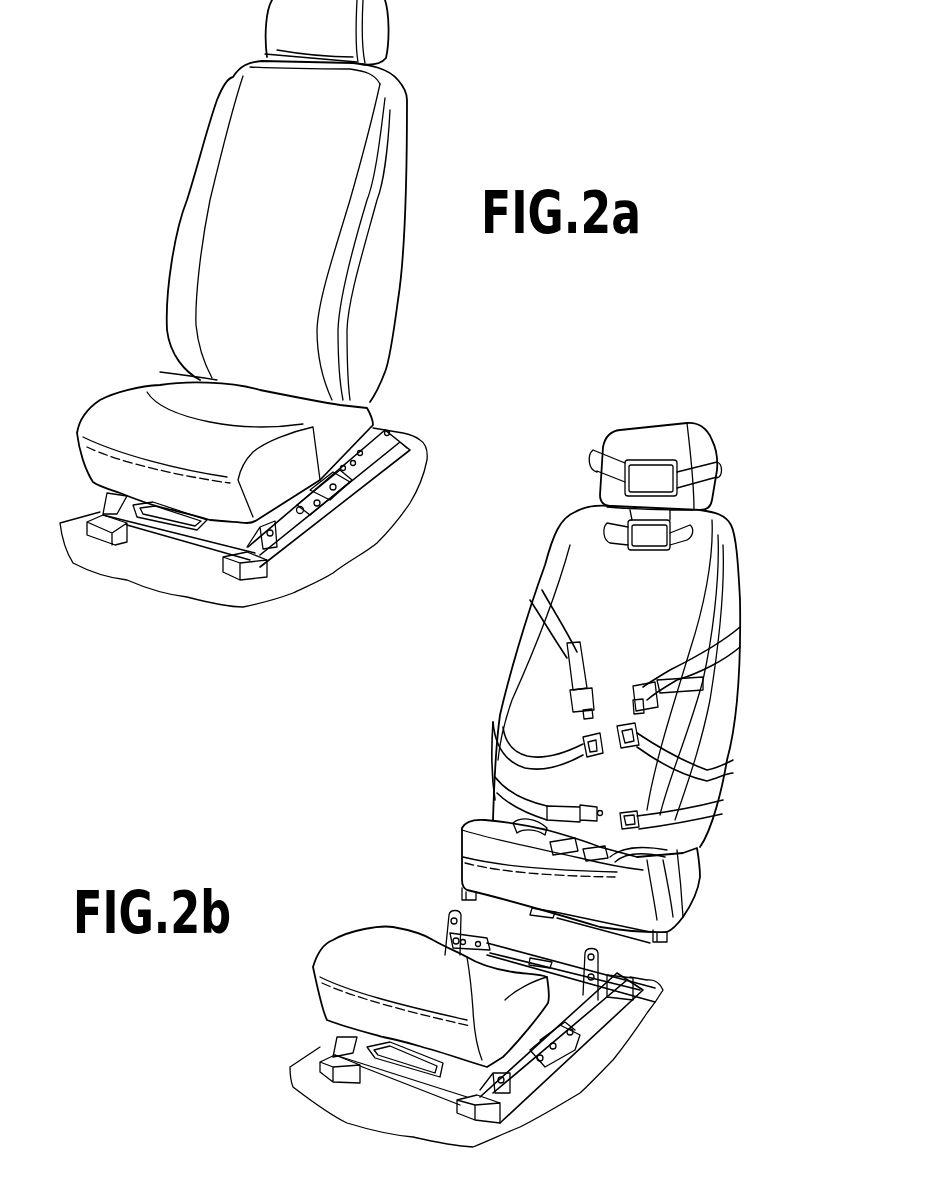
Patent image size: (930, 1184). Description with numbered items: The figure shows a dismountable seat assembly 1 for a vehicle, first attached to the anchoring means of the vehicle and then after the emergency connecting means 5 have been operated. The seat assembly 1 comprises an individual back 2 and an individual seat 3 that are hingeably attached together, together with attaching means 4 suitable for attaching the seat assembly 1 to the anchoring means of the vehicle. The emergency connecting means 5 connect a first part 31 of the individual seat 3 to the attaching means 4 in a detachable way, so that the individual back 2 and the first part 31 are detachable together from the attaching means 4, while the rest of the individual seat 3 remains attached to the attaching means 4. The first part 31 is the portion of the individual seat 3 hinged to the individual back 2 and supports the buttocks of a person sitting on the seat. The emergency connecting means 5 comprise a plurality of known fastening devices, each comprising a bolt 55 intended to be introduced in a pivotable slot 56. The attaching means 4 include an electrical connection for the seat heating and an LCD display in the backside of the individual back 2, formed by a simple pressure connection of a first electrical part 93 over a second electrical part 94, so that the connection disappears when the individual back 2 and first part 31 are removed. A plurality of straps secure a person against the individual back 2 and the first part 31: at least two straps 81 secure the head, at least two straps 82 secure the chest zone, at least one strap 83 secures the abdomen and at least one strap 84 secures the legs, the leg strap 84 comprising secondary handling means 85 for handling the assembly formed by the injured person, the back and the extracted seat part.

In FIG. 2a, the dismountable seat assembly 1 is at (160, 148).
In FIG. 2b, the dismountable seat assembly 1 is at (515, 515).
In FIG. 2a, the individual back 2 is at (222, 230).
In FIG. 2b, the individual back 2 is at (603, 573).
In FIG. 2a, the individual seat 3 is at (92, 381).
In FIG. 2b, the individual seat 3 is at (350, 911).
In FIG. 2a, the attaching means 4 is at (163, 533).
In FIG. 2b, the attaching means 4 is at (592, 1023).
In FIG. 2a, the emergency connecting means 5 is at (325, 530).
In FIG. 2b, the emergency connecting means 5 is at (590, 1058).
In FIG. 2a, the first part of the individual seat 31 is at (170, 398).
In FIG. 2b, the first part of the individual seat 31 is at (462, 856).
In FIG. 2a, the bolt 55 is at (345, 487).
In FIG. 2b, the bolt 55 is at (462, 890).
In FIG. 2a, the pivotable slot 56 is at (392, 441).
In FIG. 2b, the pivotable slot 56 is at (600, 1020).
In FIG. 2b, the straps for securing the head 81 is at (720, 463).
In FIG. 2b, the straps for securing the chest zone 82 is at (547, 752).
In FIG. 2b, the strap for securing the abdomen 83 is at (513, 792).
In FIG. 2b, the straps for securing the legs 84 is at (520, 829).
In FIG. 2b, the secondary handling means 85 is at (663, 840).
In FIG. 2b, the first electrical part 93 is at (553, 914).
In FIG. 2b, the second electrical part 94 is at (545, 960).